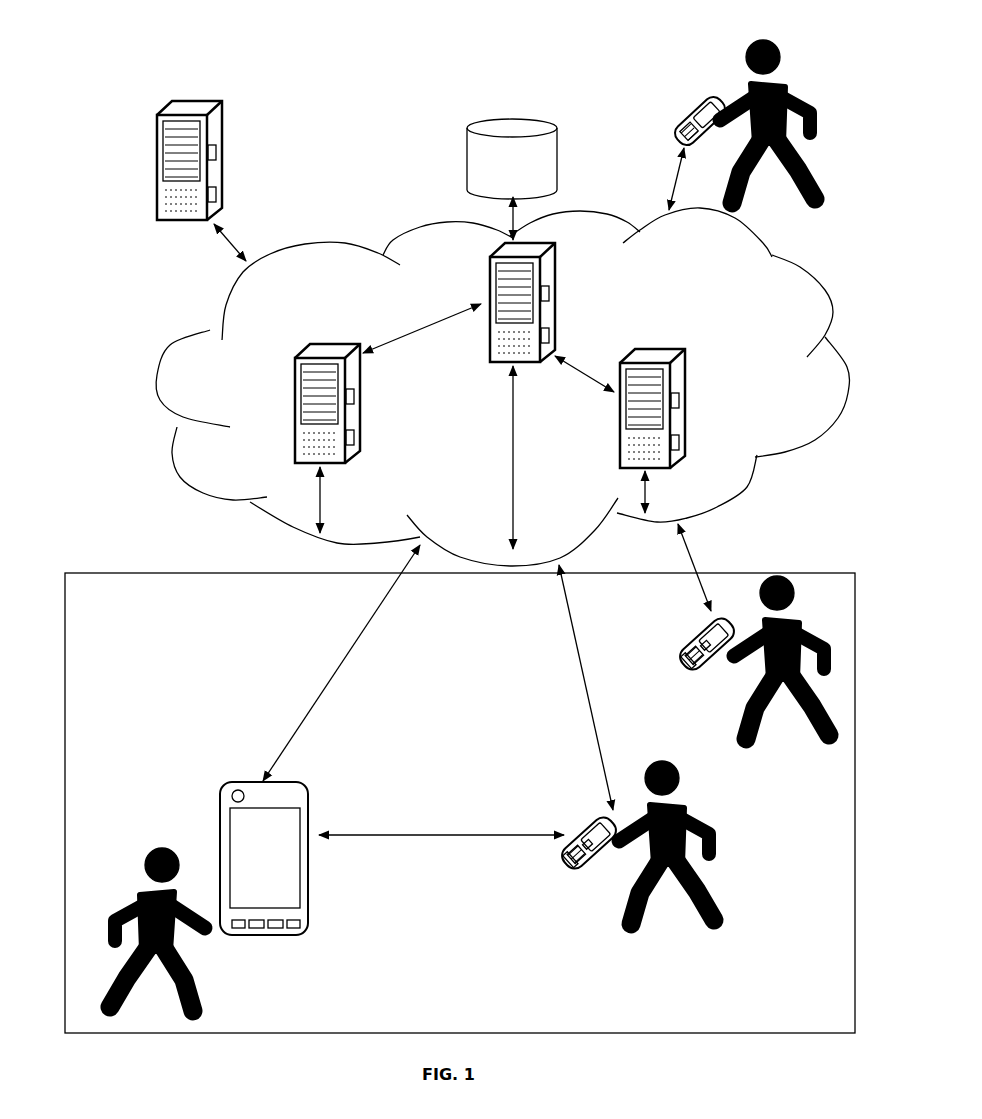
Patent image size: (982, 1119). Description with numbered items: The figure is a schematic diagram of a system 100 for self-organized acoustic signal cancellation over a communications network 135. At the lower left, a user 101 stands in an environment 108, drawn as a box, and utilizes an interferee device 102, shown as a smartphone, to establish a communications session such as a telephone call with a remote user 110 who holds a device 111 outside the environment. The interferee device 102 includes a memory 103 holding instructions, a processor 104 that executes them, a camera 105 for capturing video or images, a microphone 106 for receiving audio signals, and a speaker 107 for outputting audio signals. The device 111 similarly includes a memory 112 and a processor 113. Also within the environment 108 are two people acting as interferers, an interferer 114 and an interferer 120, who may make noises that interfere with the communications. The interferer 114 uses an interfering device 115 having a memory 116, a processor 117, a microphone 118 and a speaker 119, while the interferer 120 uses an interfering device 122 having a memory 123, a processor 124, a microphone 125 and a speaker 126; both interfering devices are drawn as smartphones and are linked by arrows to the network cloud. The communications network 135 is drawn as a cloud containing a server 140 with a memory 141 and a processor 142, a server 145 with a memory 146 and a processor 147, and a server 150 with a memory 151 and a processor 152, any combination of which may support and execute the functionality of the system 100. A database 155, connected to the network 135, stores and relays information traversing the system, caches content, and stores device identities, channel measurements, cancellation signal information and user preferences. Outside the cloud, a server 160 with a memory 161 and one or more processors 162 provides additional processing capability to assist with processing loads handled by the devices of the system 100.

The system 100 is at (513, 952).
The user 101 is at (117, 1020).
The interferee device 102 is at (220, 838).
The memory 103 is at (237, 930).
The processor 104 is at (293, 930).
The camera 105 is at (232, 797).
The microphone 106 is at (257, 930).
The speaker 107 is at (275, 930).
The environment 108 is at (120, 573).
The user 110 is at (815, 208).
The device 111 is at (686, 132).
The memory 112 is at (700, 140).
The processor 113 is at (700, 110).
The interferer 114 is at (717, 933).
The interfering device 115 is at (572, 867).
The memory 116 is at (568, 857).
The processor 117 is at (586, 867).
The microphone 118 is at (590, 830).
The speaker 119 is at (595, 823).
The interferer 120 is at (826, 745).
The interfering device 122 is at (688, 670).
The memory 123 is at (690, 653).
The processor 124 is at (702, 673).
The microphone 125 is at (703, 633).
The speaker 126 is at (723, 625).
The communications network 135 is at (188, 420).
The server 140 is at (490, 276).
The memory 141 is at (550, 294).
The processor 142 is at (550, 335).
The server 145 is at (295, 380).
The memory 146 is at (355, 397).
The processor 147 is at (355, 438).
The server 150 is at (685, 370).
The memory 151 is at (680, 401).
The processor 152 is at (680, 442).
The database 155 is at (512, 159).
The server 160 is at (157, 137).
The memory 161 is at (217, 195).
The processors 162 is at (217, 152).